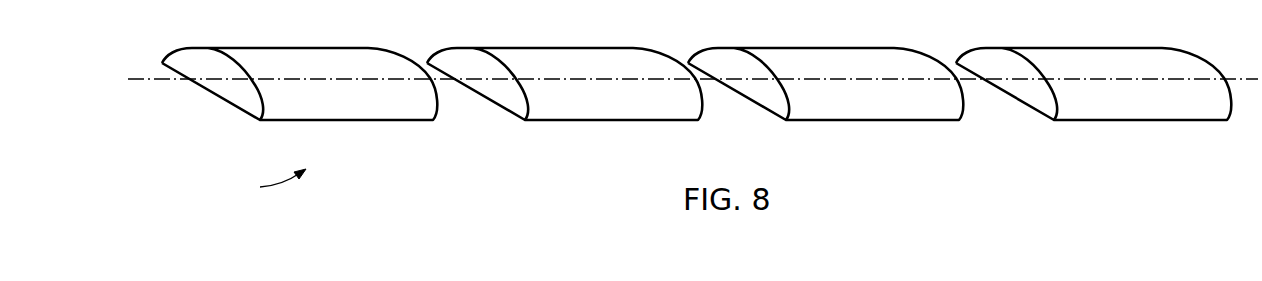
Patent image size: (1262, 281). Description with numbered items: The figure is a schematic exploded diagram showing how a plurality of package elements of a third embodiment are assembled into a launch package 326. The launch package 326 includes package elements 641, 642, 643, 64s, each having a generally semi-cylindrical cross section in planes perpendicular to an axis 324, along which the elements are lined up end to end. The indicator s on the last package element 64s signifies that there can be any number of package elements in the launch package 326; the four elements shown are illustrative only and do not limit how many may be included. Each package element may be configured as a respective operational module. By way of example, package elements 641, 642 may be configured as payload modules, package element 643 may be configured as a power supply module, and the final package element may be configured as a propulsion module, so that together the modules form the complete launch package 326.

The axis 324 is at (156, 80).
The package element 641 is at (369, 121).
The package element 642 is at (608, 121).
The package element 643 is at (873, 121).
The package element 64s is at (1159, 121).
The launch package 326 is at (265, 182).